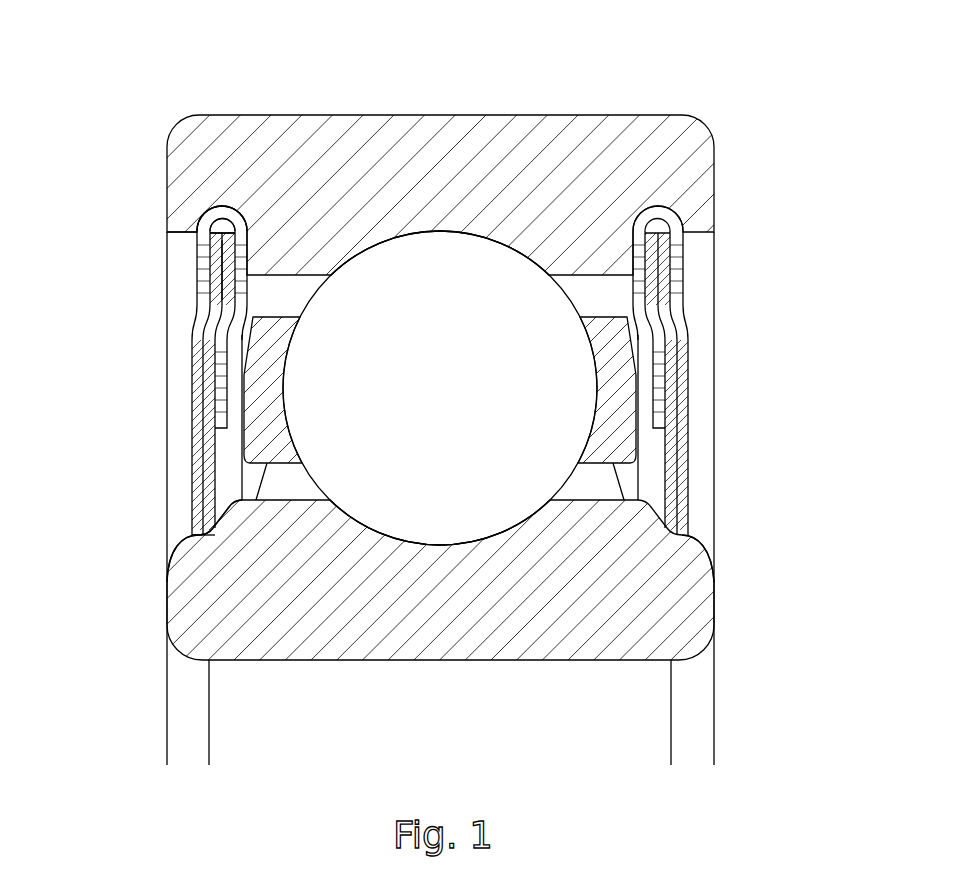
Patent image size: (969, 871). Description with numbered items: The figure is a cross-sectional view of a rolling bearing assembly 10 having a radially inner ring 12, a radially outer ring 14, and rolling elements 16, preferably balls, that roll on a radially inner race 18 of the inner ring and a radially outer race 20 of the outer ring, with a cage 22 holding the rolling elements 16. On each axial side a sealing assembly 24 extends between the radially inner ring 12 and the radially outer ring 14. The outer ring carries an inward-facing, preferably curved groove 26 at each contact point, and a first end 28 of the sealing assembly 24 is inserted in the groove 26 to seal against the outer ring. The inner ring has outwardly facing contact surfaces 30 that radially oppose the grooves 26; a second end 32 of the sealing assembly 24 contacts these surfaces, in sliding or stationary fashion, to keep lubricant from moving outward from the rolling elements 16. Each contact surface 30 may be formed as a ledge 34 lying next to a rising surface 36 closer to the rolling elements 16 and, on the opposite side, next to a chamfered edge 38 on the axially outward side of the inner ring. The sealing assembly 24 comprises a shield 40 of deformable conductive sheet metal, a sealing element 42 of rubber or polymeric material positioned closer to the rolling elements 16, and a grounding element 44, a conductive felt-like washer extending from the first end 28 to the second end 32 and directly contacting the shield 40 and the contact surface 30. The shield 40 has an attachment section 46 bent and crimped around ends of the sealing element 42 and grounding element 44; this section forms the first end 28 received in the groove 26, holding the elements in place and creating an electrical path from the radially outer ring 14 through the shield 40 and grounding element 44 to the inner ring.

The rolling bearing assembly 10 is at (742, 100).
The radially inner ring 12 is at (598, 628).
The radially outer ring 14 is at (600, 140).
The rolling elements 16 is at (440, 388).
The radially inner race 18 is at (470, 540).
The radially outer race 20 is at (472, 240).
The cage 22 is at (623, 375).
The sealing assembly 24 is at (186, 308).
The groove 26 is at (222, 205).
The first end 28 is at (197, 223).
The contact surfaces 30 is at (168, 590).
The second end 32 is at (193, 534).
The ledge 34 is at (195, 537).
The rising surface 36 is at (216, 537).
The chamfered edge 38 is at (175, 540).
The shield 40 is at (205, 255).
The sealing element 42 is at (210, 492).
The grounding element 44 is at (205, 447).
The attachment section 46 is at (193, 218).